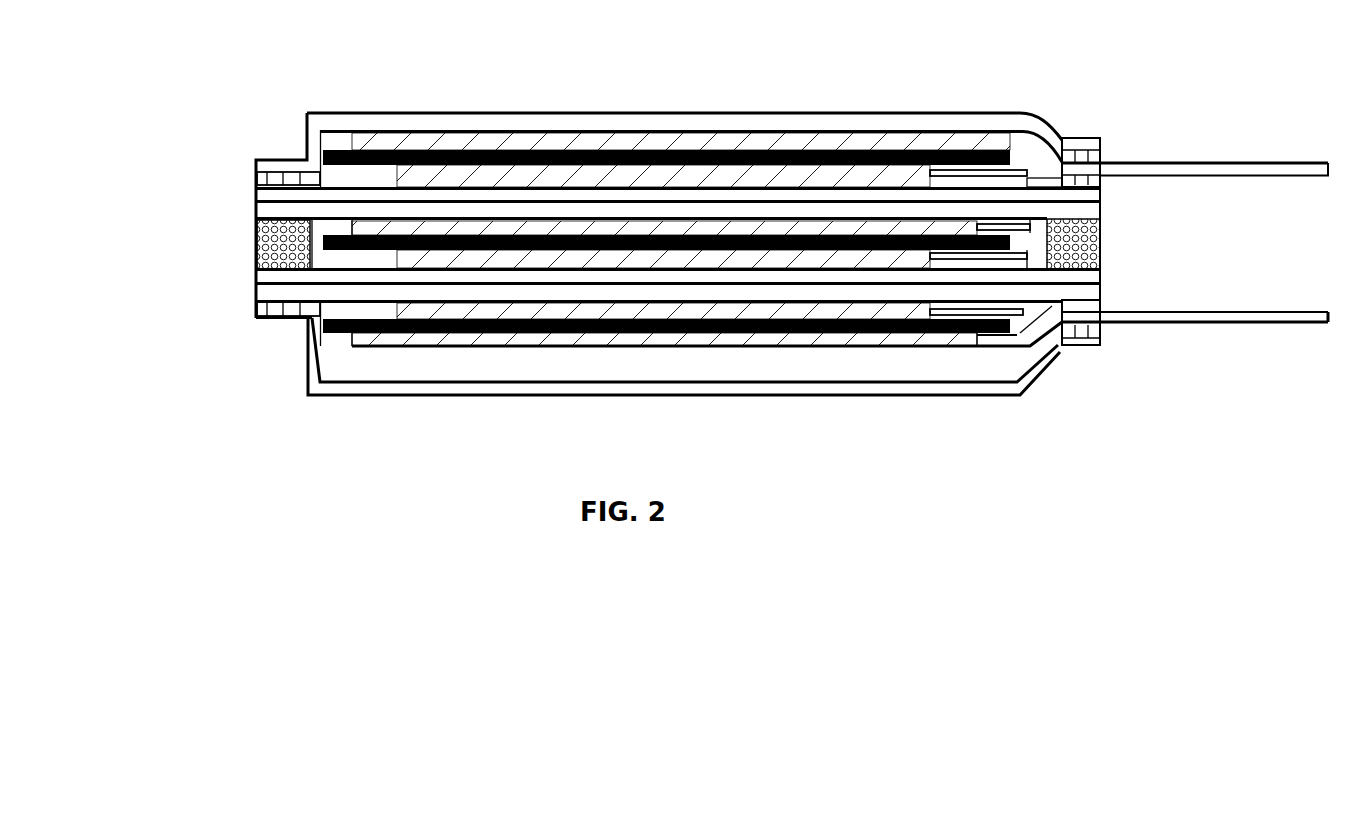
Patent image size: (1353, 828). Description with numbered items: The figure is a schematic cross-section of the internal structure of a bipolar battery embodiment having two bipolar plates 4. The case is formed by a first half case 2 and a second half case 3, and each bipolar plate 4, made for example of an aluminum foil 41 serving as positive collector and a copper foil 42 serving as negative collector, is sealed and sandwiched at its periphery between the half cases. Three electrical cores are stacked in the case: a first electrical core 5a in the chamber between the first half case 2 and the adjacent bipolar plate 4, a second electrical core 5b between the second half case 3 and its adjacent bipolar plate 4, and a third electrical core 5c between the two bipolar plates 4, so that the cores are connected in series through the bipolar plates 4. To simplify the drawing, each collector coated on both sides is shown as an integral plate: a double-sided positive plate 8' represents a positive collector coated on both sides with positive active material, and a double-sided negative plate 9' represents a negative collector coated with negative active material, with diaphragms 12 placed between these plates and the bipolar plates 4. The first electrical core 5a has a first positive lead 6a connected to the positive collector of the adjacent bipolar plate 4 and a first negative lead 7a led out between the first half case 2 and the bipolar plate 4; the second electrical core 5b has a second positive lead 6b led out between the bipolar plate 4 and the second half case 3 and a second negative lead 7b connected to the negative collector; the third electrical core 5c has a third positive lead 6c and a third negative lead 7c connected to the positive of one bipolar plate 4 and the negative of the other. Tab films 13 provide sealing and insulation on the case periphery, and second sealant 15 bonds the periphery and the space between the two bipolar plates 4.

The first half case 2 is at (387, 121).
The second half case 3 is at (307, 385).
The bipolar plate 4 is at (629, 251).
The Al foil 41 is at (255, 192).
The Cu foil 42 is at (257, 212).
The tab film 13 is at (257, 177).
The second sealant 15 is at (257, 260).
The first electrical core 5a is at (824, 101).
The second electrical core 5b is at (825, 309).
The third electrical core 5c is at (762, 292).
The diaphragm 12 is at (698, 158).
The double-sided negative plate 9' is at (681, 239).
The double-sided positive plate 8' is at (664, 237).
The first positive lead 6a is at (958, 175).
The second positive lead 6b is at (997, 337).
The third positive lead 6c is at (1067, 345).
The first negative lead 7a is at (1040, 155).
The second negative lead 7b is at (1023, 317).
The third negative lead 7c is at (1027, 225).